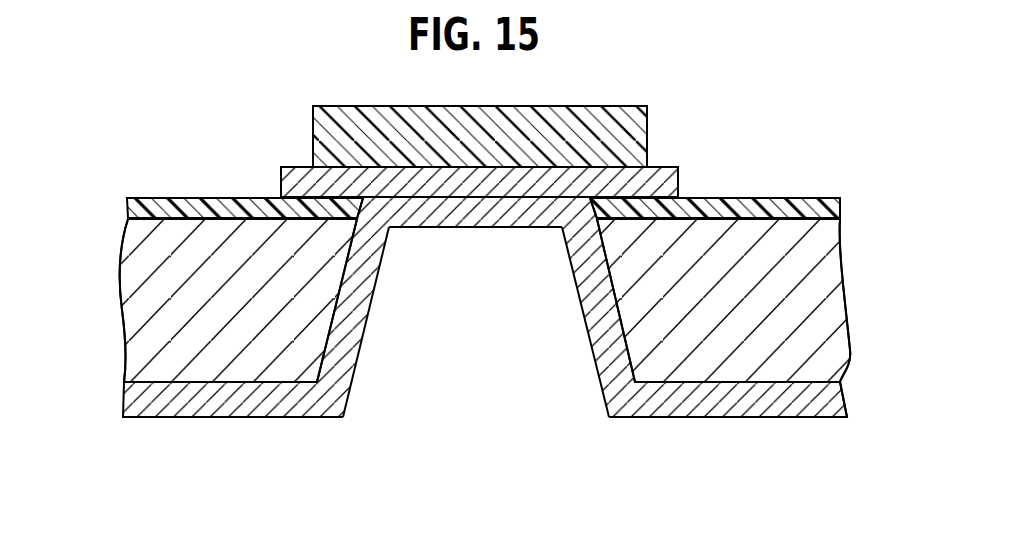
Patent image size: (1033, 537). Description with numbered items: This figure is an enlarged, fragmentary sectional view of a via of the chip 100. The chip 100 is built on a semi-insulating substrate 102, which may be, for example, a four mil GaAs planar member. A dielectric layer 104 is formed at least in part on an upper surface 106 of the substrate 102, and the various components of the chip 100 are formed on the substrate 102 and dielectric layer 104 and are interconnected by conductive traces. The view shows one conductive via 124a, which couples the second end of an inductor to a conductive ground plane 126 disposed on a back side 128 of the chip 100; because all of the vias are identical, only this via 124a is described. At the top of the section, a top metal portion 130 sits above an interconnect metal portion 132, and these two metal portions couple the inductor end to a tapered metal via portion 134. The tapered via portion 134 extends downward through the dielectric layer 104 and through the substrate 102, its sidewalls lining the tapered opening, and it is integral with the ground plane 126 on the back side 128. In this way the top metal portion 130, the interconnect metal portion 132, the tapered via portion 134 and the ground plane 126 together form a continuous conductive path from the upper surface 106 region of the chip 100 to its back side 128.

The chip 100 is at (822, 114).
The semi-insulating substrate 102 is at (158, 292).
The dielectric layer 104 is at (155, 197).
The upper surface 106 is at (130, 245).
The conductive via 124a is at (458, 228).
The conductive ground plane 126 is at (820, 417).
The back side 128 is at (846, 368).
The top metal portion 130 is at (330, 133).
The interconnect metal portion 132 is at (292, 182).
The tapered metal via portion 134 is at (362, 345).